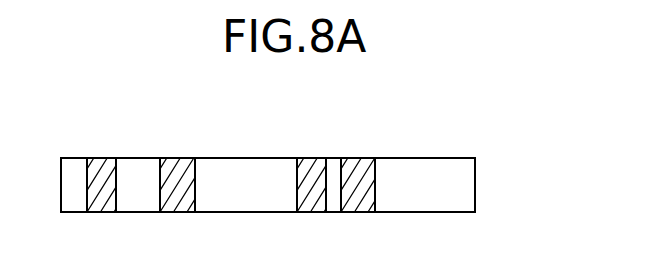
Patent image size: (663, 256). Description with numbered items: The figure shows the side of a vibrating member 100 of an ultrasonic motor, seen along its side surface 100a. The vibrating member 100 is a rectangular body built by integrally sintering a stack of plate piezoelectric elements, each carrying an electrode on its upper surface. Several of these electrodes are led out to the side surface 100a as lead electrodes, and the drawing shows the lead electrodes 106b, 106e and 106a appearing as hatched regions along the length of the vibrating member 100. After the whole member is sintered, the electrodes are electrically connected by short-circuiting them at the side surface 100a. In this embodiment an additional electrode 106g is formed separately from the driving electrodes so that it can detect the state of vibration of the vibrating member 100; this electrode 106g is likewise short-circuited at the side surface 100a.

The vibrating member 100 is at (476, 188).
The side surface 100a is at (428, 165).
The electrode 106g is at (102, 157).
The lead electrode 106b is at (175, 158).
The lead electrode 106e is at (306, 160).
The lead electrode 106a is at (362, 160).